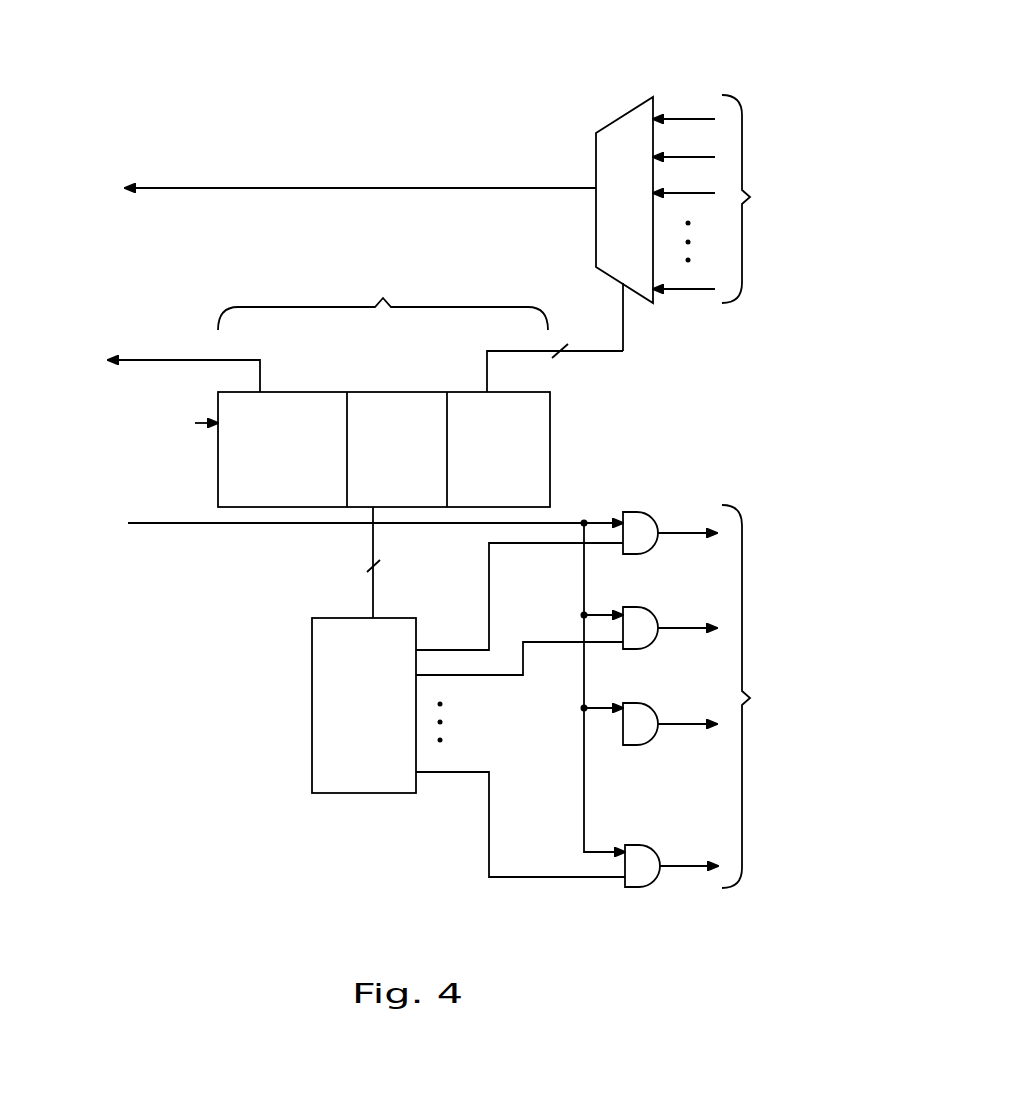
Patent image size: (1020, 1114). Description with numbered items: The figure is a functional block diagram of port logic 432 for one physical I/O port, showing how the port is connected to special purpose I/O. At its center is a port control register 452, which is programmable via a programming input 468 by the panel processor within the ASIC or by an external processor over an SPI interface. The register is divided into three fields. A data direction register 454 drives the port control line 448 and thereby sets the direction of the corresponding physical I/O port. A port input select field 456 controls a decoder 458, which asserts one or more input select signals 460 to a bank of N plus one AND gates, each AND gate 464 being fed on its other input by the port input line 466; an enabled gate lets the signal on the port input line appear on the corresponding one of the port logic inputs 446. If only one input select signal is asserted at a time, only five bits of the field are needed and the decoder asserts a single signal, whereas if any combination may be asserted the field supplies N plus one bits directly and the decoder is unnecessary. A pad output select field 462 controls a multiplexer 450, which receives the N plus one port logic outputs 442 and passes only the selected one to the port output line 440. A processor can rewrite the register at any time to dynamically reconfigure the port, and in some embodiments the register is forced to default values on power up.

The port logic 432 is at (330, 160).
The port output line 440 is at (323, 138).
The port logic outputs 442 is at (767, 199).
The port logic inputs 446 is at (771, 696).
The port control line 448 is at (151, 318).
The multiplexer 450 is at (620, 118).
The port control register 452 is at (420, 369).
The data direction register 454 is at (285, 392).
The port input select field 456 is at (403, 449).
The decoder 458 is at (377, 650).
The input select signals 460 is at (489, 575).
The pad output select field 462 is at (498, 448).
The AND gate 464 is at (640, 512).
The port input line 466 is at (346, 681).
The programming input 468 is at (125, 449).